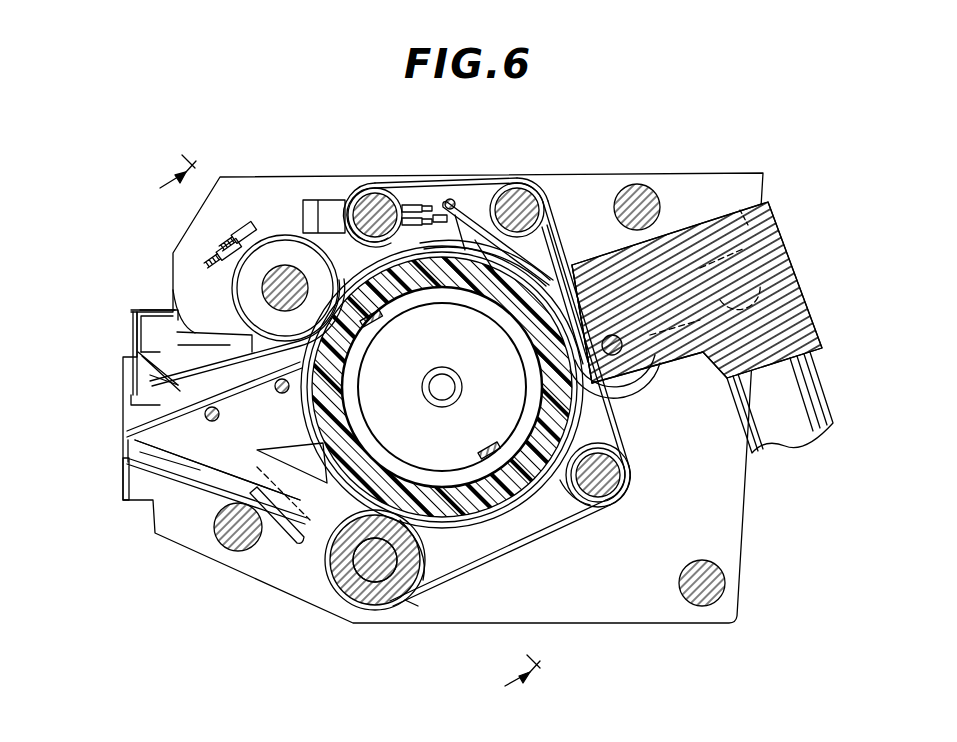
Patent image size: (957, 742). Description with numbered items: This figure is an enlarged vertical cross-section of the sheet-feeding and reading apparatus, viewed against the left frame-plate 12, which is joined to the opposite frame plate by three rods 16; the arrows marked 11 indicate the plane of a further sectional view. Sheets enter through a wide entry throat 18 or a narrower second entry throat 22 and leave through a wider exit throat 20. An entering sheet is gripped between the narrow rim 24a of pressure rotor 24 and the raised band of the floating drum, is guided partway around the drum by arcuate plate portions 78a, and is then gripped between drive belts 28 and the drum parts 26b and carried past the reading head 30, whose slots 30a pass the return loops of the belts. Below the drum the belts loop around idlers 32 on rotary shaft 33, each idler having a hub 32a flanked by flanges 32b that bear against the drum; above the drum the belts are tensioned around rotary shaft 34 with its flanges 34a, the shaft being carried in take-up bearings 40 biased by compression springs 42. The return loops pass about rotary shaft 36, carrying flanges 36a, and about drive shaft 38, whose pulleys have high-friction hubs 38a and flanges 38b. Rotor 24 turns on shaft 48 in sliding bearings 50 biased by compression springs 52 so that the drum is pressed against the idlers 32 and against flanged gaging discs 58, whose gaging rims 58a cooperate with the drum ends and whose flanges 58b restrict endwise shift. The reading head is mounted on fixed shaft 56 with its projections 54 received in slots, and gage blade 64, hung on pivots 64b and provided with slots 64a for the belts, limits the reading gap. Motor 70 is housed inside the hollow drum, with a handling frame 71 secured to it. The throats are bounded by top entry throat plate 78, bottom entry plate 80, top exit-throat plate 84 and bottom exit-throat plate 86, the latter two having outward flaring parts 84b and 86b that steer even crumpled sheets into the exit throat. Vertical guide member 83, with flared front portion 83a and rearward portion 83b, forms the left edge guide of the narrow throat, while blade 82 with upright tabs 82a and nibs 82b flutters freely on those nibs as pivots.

The section line 11 is at (339, 424).
The left frame-plate 12 is at (300, 177).
The rods 16 is at (637, 207).
The entry throat 18 is at (135, 407).
The exit throat 20 is at (128, 452).
The second entry throat 22 is at (128, 360).
The pressure rotor 24 is at (232, 283).
The narrow rim 24a is at (270, 240).
The drum parts 26b is at (468, 518).
The drive belts 28 is at (512, 195).
The reading head 30 is at (790, 275).
The slots 30a is at (573, 262).
The idlers 32 is at (330, 597).
The hubs 32a is at (468, 556).
The flanges 32b is at (420, 588).
The rotary shaft 33 is at (388, 580).
The rotary shaft 34 is at (372, 198).
The flanges 34a is at (417, 198).
The rotary shaft 36 is at (530, 192).
The flanges 36a is at (560, 192).
The drive shaft 38 is at (630, 480).
The hub portion 38a is at (610, 448).
The flanges 38b is at (563, 496).
The take-up bearings 40 is at (330, 200).
The compression springs 42 is at (427, 212).
The shaft 48 is at (270, 292).
The sliding bearings 50 is at (242, 228).
The compression springs 52 is at (218, 255).
The projections 54 is at (740, 210).
The fixed shaft 56 is at (616, 365).
The flanged gaging discs 58 is at (688, 433).
The gaging rims 58a is at (665, 378).
The flanges 58b is at (668, 405).
The gage blade 64 is at (462, 204).
The slots 64a is at (545, 300).
The pivots 64b is at (455, 200).
The motor 70 is at (442, 387).
The handling frame 71 is at (492, 450).
The top entry throat plate 78 is at (238, 356).
The plate portions 78a is at (430, 290).
The bottom entry plate 80 is at (135, 432).
The blade 82 is at (180, 418).
The upright tabs 82a is at (150, 378).
The nibs 82b is at (142, 352).
The vertical guide member 83 is at (135, 394).
The flared front portion 83a is at (143, 333).
The rearward portion 83b is at (173, 300).
The top exit-throat plate 84 is at (130, 470).
The outward flaring parts 84b is at (297, 452).
The bottom exit-throat plate 86 is at (207, 486).
The outward flaring parts 86b is at (297, 540).